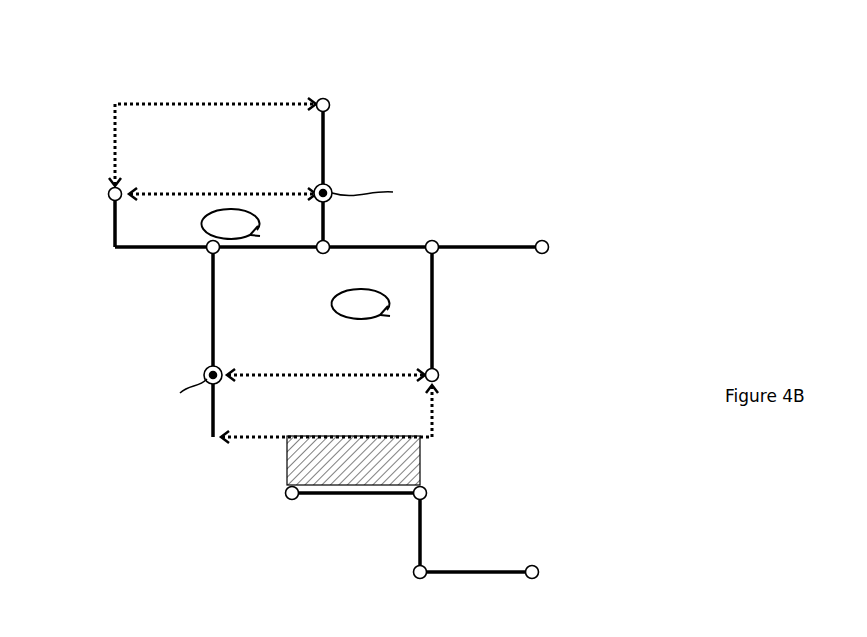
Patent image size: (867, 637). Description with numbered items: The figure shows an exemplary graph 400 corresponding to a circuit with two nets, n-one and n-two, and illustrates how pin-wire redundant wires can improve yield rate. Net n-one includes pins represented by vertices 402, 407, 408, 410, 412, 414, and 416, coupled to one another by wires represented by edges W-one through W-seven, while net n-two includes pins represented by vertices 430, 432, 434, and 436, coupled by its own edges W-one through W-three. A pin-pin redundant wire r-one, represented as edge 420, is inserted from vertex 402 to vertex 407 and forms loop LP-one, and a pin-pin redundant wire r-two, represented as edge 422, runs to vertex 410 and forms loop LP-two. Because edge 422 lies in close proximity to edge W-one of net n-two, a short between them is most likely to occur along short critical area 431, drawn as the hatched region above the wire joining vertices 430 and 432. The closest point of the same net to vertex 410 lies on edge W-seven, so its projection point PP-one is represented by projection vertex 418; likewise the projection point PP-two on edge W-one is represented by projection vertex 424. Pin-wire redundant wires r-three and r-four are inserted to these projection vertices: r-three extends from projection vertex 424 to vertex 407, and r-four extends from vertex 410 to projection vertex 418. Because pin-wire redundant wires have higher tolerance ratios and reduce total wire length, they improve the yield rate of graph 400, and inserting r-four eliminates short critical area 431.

The graph 400 is at (58, 27).
The vertex 402 is at (331, 103).
The node 407 is at (108, 193).
The vertex 408 is at (438, 241).
The vertex 410 is at (438, 372).
The vertex 412 is at (211, 253).
The vertex 414 is at (329, 243).
The vertex 416 is at (547, 242).
The projection vertex 418 is at (217, 367).
The edge 420 is at (214, 104).
The edge 422 is at (436, 426).
The projection vertex 424 is at (330, 186).
The vertex 430 is at (290, 499).
The short critical area 431 is at (286, 462).
The vertex 432 is at (427, 491).
The vertex 434 is at (416, 578).
The vertex 436 is at (538, 569).